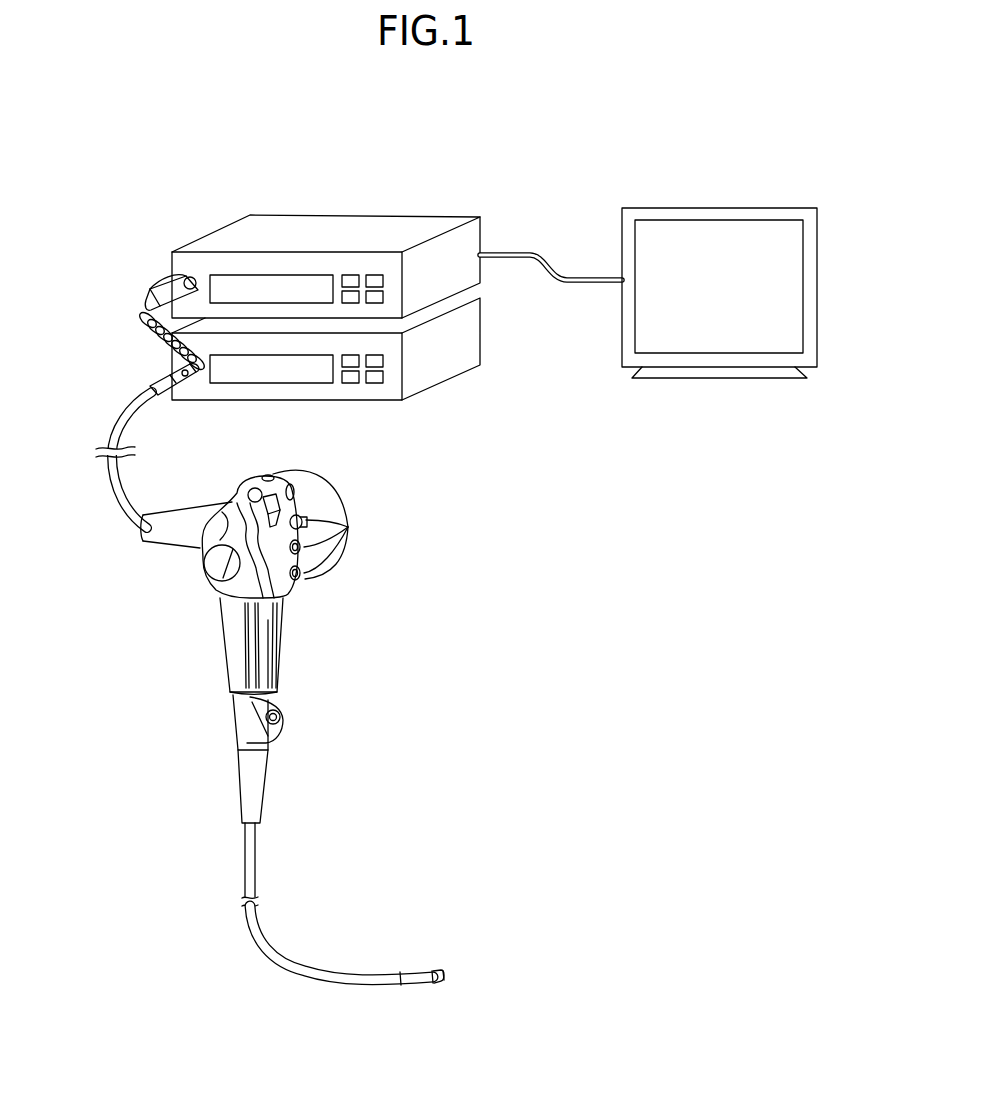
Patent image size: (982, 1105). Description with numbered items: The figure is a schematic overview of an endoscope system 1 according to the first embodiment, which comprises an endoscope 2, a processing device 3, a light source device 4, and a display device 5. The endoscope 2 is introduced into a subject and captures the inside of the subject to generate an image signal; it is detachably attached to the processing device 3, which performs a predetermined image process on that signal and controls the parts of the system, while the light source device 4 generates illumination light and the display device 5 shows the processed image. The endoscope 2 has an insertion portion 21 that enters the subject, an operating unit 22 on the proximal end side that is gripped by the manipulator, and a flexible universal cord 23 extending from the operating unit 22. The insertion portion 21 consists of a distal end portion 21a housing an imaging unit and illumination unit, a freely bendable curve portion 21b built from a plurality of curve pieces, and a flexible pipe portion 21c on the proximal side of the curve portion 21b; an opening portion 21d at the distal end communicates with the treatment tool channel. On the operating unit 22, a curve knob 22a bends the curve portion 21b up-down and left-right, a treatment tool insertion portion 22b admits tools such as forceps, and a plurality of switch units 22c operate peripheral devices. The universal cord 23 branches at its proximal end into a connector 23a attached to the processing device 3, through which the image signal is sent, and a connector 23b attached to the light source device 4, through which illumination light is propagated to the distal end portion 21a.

The endoscope system 1 is at (755, 144).
The endoscope 2 is at (347, 498).
The processing device 3 is at (452, 222).
The light source device 4 is at (472, 333).
The display device 5 is at (717, 215).
The insertion portion 21 is at (387, 938).
The distal end portion 21a is at (437, 984).
The curve portion 21b is at (413, 969).
The flexible pipe portion 21c is at (292, 969).
The opening portion 21d is at (443, 974).
The operating unit 22 is at (267, 623).
The curve knob 22a is at (203, 578).
The treatment tool insertion portion 22b is at (281, 717).
The switch units 22c is at (333, 525).
The universal cord 23 is at (129, 401).
The connector 23a is at (150, 287).
The connector 23b is at (200, 362).